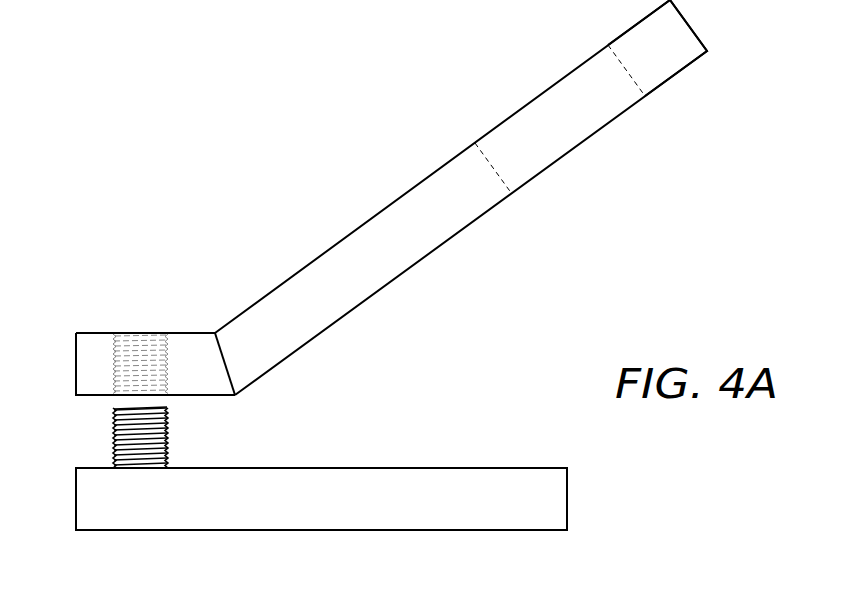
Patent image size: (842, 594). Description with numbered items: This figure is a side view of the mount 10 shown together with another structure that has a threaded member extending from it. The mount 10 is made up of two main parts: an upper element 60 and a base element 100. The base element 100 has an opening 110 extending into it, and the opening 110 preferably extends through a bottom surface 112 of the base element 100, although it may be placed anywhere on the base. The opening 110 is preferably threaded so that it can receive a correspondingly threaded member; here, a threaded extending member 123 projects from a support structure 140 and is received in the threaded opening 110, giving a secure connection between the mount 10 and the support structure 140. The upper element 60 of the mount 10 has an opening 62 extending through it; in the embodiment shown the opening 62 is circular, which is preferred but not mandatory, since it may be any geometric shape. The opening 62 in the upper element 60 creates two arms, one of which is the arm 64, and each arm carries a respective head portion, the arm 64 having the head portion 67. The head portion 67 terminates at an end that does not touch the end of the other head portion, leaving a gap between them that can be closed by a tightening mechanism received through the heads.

The mount 10 is at (93, 333).
The upper element 60 is at (387, 235).
The opening 62 is at (547, 89).
The arm 64 is at (548, 130).
The head portion 67 is at (658, 50).
The base element 100 is at (92, 388).
The opening 110 is at (138, 333).
The bottom surface 112 is at (212, 397).
The threaded extending member 123 is at (117, 436).
The support structure 140 is at (180, 517).